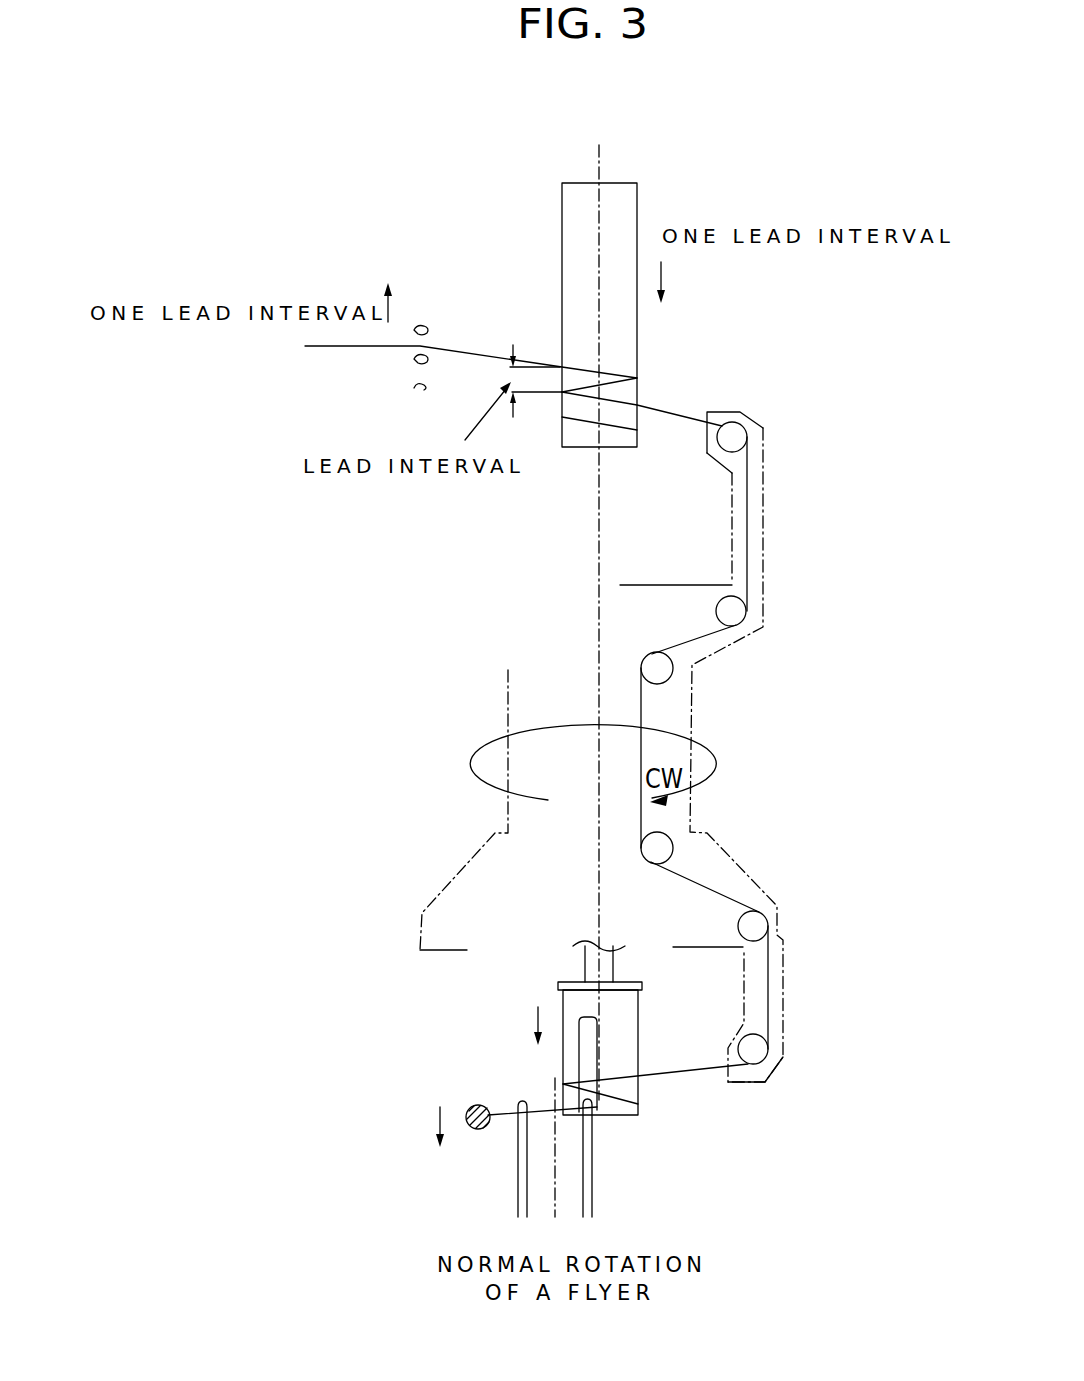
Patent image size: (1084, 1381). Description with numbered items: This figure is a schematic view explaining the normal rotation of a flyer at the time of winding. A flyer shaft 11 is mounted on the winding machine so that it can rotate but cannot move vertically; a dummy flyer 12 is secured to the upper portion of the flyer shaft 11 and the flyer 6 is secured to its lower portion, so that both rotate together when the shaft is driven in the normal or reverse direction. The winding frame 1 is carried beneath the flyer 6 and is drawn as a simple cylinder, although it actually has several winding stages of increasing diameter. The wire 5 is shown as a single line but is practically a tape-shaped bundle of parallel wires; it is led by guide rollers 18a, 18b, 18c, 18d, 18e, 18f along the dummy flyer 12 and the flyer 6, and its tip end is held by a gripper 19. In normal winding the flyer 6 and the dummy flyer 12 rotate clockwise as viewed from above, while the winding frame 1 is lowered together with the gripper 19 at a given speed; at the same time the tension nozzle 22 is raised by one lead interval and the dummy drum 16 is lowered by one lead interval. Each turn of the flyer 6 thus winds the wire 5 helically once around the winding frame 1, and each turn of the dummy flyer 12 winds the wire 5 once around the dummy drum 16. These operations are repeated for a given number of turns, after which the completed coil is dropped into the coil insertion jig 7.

The winding frame 1 is at (650, 1014).
The wire 5 is at (355, 347).
The flyer 6 is at (779, 1089).
The coil insertion jig 7 is at (590, 1175).
The flyer shaft 11 is at (701, 709).
The dummy flyer 12 is at (776, 489).
The dummy drum 16 is at (630, 326).
The guide roller 18a is at (742, 435).
The guide roller 18b is at (740, 611).
The guide roller 18c is at (667, 672).
The guide roller 18d is at (660, 847).
The guide roller 18e is at (758, 925).
The guide roller 18f is at (758, 1048).
The gripper 19 is at (473, 1130).
The tension nozzle 22 is at (424, 322).